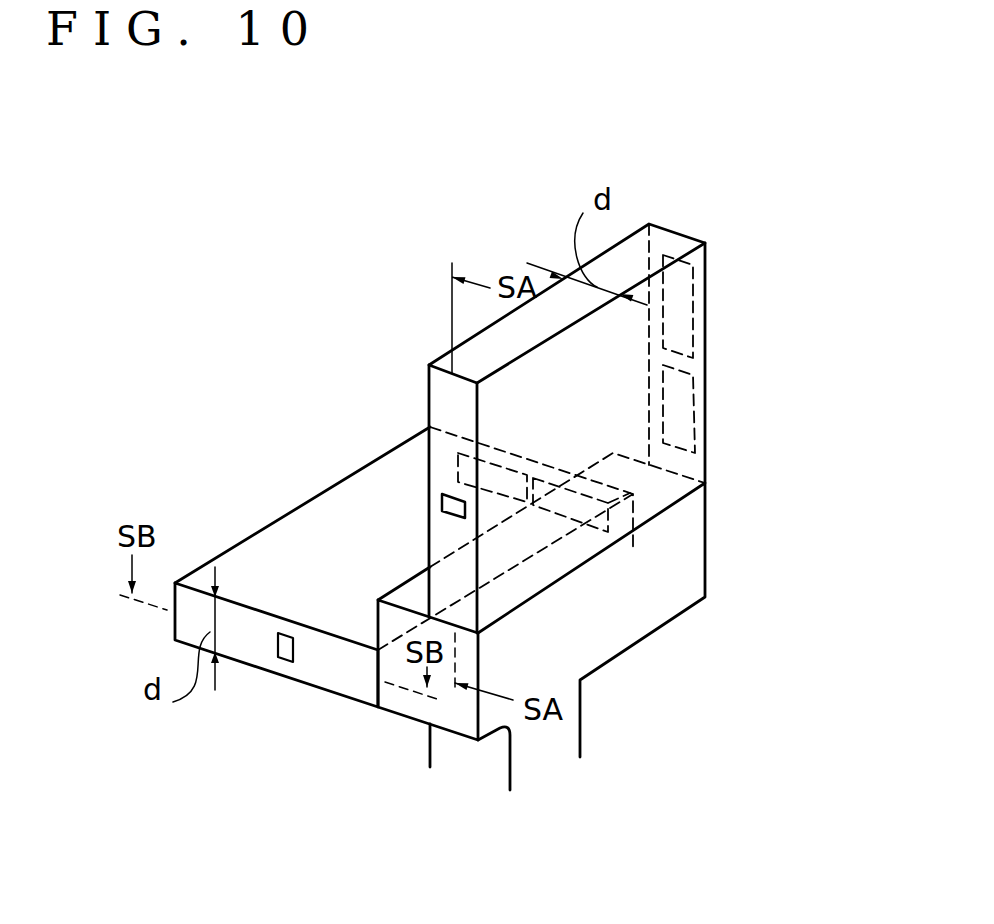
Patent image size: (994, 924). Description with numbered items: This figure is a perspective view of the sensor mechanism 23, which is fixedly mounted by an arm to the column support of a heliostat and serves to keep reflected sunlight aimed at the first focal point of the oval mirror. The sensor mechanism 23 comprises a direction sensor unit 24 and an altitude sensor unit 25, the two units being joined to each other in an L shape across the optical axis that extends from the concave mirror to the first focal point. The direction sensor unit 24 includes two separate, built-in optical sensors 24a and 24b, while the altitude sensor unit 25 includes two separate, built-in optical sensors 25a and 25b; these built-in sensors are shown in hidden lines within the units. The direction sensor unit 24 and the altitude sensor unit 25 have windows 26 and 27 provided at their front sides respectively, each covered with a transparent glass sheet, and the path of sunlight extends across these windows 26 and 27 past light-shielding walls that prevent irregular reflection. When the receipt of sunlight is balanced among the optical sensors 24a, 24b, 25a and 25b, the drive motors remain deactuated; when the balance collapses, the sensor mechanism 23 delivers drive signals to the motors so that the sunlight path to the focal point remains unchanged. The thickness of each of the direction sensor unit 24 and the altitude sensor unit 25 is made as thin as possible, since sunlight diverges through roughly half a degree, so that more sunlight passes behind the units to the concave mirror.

The sensor mechanism 23 is at (758, 203).
The direction sensor unit 24 is at (297, 520).
The optical sensor 24a is at (500, 487).
The optical sensor 24b is at (593, 520).
The altitude sensor unit 25 is at (446, 358).
The optical sensor 25a is at (688, 420).
The optical sensor 25b is at (692, 298).
The window 26 is at (277, 648).
The window 27 is at (442, 500).